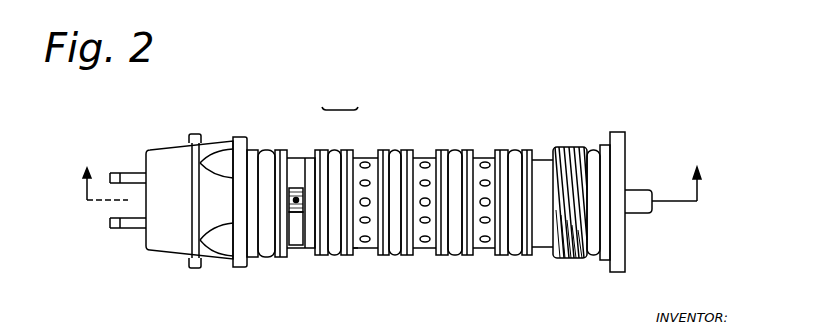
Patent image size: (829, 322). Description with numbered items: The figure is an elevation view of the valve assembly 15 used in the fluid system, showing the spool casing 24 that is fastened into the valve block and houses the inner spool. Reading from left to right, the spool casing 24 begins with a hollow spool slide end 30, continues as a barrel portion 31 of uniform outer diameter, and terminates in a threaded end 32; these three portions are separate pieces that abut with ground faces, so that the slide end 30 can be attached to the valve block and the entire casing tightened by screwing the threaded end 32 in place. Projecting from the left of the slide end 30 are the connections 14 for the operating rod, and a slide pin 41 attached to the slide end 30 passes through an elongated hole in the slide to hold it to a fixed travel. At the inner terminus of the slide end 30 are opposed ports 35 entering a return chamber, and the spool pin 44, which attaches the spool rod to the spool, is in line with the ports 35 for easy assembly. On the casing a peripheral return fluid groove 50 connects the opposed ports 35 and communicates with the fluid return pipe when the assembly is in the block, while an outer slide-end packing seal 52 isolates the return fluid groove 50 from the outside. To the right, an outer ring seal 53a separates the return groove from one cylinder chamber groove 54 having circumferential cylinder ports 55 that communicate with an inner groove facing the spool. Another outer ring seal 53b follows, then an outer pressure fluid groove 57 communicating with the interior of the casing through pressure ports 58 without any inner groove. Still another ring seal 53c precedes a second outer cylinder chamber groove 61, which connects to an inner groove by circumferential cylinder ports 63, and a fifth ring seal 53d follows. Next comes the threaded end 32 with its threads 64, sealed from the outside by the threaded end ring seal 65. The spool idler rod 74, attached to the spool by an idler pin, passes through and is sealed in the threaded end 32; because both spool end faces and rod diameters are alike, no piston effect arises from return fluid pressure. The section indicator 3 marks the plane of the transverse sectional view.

The section line 3- 3 is at (387, 190).
The plug prongs 14 is at (119, 230).
The valve assembly 15 is at (352, 107).
The spool casing 24 is at (321, 150).
The hollow spool slide end 30 is at (165, 160).
The barrel portion 31 is at (388, 150).
The threaded end 32 is at (603, 146).
The opposed ports 35 is at (303, 215).
The slide pin 41 is at (189, 264).
The spool pin 44 is at (296, 200).
The peripheral return fluid groove 50 is at (296, 248).
The outer slide-end packing seal 52 is at (269, 258).
The outer ring seal 53a is at (335, 256).
The outer ring seal 53b is at (388, 256).
The ring seal 53c is at (456, 150).
The fifth ring seal 53d is at (512, 150).
The cylinder chamber groove 54 is at (368, 245).
The circumferential cylinder ports 55 is at (352, 258).
The outer pressure fluid groove 57 is at (427, 245).
The pressure ports 58 is at (442, 257).
The second outer cylinder chamber groove 61 is at (477, 249).
The circumferential cylinder ports 63 is at (487, 243).
The threads 64 is at (571, 257).
The threaded end ring seal 65 is at (594, 258).
The spool idler rod 74 is at (640, 196).